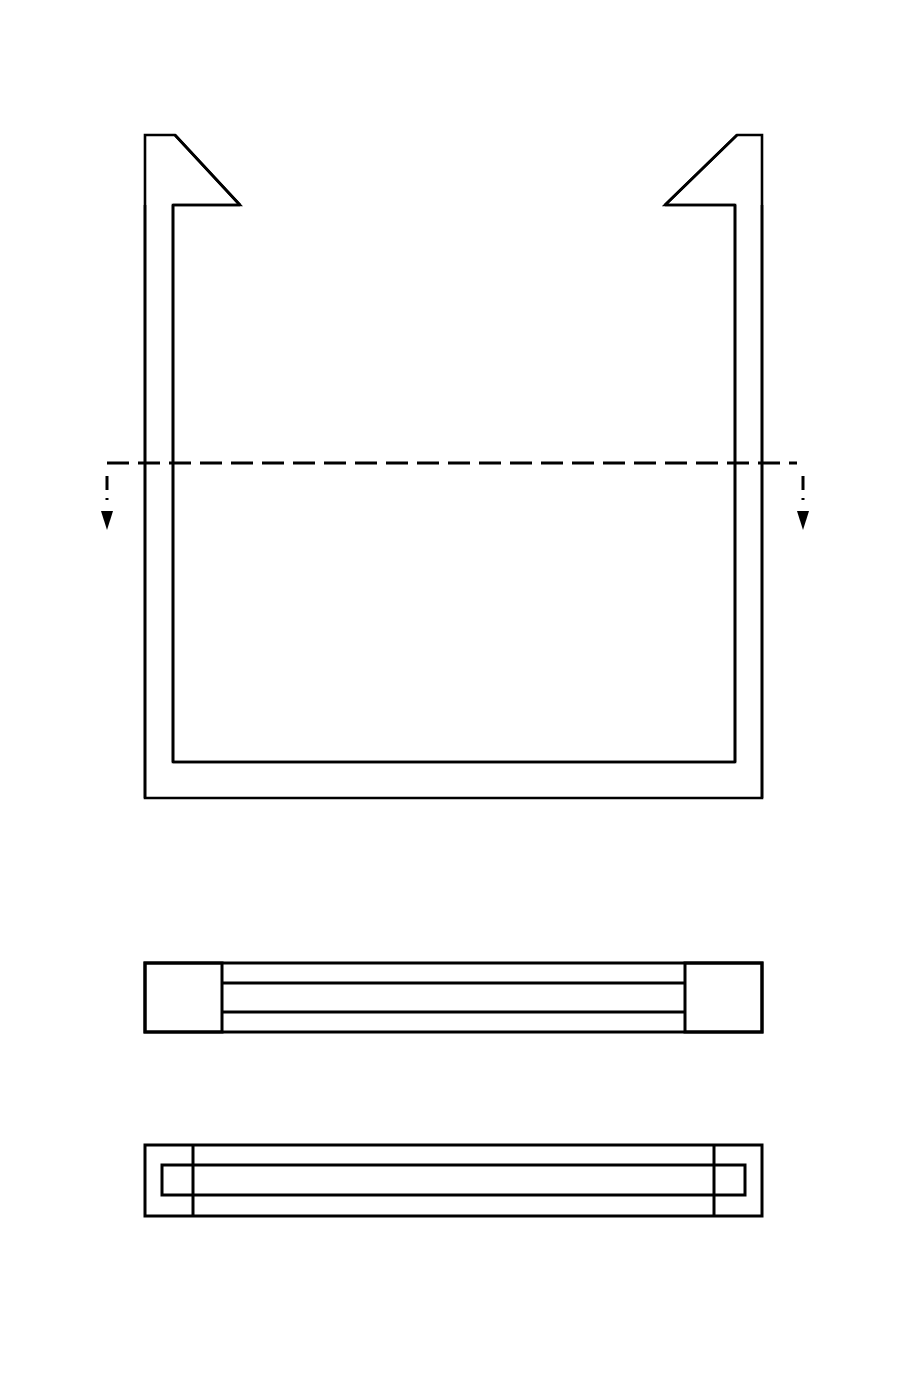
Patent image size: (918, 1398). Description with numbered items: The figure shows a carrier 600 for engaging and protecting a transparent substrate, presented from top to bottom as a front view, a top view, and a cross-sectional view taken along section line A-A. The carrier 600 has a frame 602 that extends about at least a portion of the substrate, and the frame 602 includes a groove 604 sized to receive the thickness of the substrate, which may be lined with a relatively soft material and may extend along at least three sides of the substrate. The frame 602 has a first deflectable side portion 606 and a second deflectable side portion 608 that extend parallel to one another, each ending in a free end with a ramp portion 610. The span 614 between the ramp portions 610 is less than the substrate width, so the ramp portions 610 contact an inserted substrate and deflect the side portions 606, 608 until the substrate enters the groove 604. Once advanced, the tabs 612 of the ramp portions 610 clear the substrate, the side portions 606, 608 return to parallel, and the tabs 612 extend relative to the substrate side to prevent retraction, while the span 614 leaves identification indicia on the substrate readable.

The carrier 600 is at (88, 122).
The frame 602 is at (340, 778).
The groove 604 is at (332, 997).
The first deflectable side portion 606 is at (157, 302).
The second deflectable side portion 608 is at (747, 295).
The ramp portion 610 is at (208, 168).
The tab 612 is at (203, 207).
The span 614 is at (409, 172).